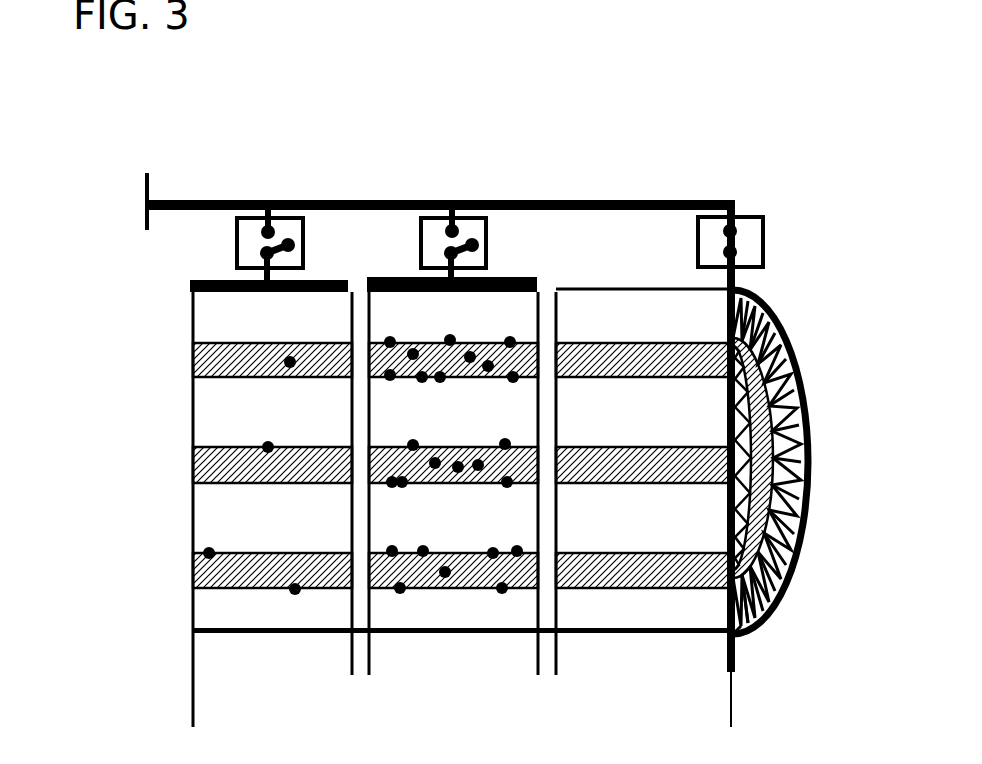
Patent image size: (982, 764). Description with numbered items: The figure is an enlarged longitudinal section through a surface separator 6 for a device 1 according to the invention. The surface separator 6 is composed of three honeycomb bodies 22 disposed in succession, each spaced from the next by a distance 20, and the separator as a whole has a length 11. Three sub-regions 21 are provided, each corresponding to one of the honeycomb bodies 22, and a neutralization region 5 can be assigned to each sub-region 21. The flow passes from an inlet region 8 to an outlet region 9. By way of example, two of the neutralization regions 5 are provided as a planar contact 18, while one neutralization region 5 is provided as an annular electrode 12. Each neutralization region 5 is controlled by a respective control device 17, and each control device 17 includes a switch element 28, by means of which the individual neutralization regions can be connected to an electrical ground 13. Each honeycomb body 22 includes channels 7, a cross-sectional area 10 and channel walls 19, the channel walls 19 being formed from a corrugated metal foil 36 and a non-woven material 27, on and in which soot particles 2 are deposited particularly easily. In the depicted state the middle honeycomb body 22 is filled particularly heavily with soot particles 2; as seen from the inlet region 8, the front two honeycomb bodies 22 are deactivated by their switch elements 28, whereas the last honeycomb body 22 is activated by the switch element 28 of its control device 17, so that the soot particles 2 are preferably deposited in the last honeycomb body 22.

The device 1 is at (733, 698).
The soot particles 2 is at (205, 550).
The neutralization region 5 is at (190, 283).
The surface separator 6 is at (148, 368).
The channels 7 is at (795, 488).
The inlet region 8 is at (153, 433).
The outlet region 9 is at (807, 474).
The cross-sectional area 10 is at (783, 318).
The length 11 is at (566, 700).
The annular electrode 12 is at (780, 372).
The electrical ground 13 is at (147, 205).
The control device 17 is at (252, 218).
The planar contact 18 is at (332, 278).
The channel walls 19 is at (802, 552).
The distance 20 is at (330, 661).
The sub-region 21 is at (463, 632).
The honeycomb body 22 is at (217, 632).
The non-woven material 27 is at (753, 617).
The switch element 28 is at (265, 243).
The corrugated metal foil 36 is at (787, 597).